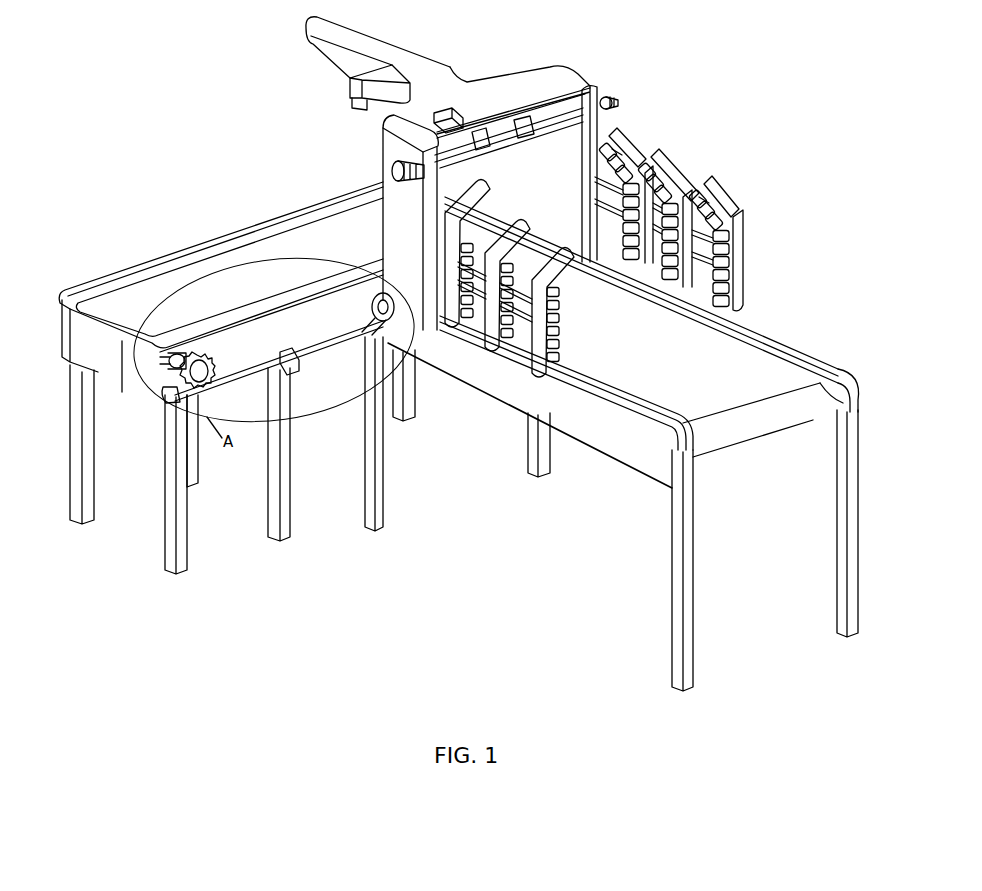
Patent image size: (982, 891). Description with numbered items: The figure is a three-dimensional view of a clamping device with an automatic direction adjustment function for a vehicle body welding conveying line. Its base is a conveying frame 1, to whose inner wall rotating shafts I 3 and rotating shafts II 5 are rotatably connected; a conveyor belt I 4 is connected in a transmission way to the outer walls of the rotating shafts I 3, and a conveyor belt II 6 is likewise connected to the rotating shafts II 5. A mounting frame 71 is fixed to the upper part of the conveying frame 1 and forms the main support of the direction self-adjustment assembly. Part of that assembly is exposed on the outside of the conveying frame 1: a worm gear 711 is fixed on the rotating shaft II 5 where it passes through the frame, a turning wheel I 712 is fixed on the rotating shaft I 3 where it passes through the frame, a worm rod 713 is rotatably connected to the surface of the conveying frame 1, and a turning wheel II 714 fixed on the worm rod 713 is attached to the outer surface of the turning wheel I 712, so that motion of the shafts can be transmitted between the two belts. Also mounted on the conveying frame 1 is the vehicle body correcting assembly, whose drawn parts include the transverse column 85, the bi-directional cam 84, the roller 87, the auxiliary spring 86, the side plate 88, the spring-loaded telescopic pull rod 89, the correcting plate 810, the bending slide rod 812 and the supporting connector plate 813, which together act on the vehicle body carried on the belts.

The conveying frame 1 is at (310, 217).
The rotating shaft I 3 is at (826, 395).
The conveyor belt I 4 is at (723, 362).
The rotating shaft II 5 is at (168, 358).
The conveyor belt II 6 is at (243, 257).
The mounting frame 71 is at (583, 90).
The bi-directional cam 84 is at (519, 133).
The transverse column 85 is at (427, 137).
The auxiliary spring 86 is at (392, 168).
The roller 87 is at (487, 138).
The side plate 88 is at (722, 172).
The spring-loaded telescopic pull rod 89 is at (681, 170).
The correcting plate 810 is at (724, 215).
The bending slide rod 812 is at (603, 134).
The supporting connector plate 813 is at (630, 170).
The worm gear 711 is at (210, 368).
The turning wheel I 712 is at (394, 310).
The worm rod 713 is at (303, 360).
The turning wheel II 714 is at (404, 348).